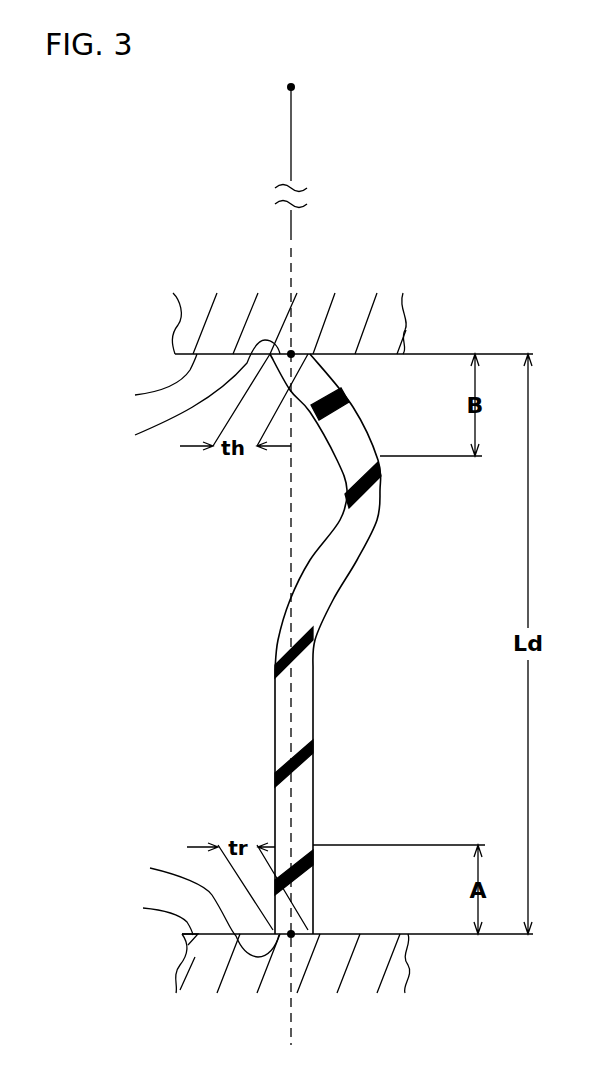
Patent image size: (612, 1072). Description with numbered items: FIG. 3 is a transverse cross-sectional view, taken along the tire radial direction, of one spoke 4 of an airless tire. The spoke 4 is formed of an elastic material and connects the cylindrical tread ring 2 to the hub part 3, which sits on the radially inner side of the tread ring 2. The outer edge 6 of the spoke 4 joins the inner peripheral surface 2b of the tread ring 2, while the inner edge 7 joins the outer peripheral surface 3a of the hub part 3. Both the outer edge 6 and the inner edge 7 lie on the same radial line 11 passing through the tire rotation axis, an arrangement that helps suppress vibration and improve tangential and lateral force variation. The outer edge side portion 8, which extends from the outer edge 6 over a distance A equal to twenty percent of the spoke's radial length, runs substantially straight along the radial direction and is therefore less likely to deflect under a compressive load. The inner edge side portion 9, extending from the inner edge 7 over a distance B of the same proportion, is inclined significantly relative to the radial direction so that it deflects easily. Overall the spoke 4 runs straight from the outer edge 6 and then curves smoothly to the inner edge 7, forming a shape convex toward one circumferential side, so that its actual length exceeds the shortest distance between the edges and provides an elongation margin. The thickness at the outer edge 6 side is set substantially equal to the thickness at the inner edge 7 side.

The tread ring 2 is at (338, 1022).
The inner peripheral surface 2b is at (151, 914).
The hub part 3 is at (333, 279).
The outer peripheral surface 3a is at (147, 382).
The spoke 4 is at (217, 672).
The outer edge 6 is at (220, 901).
The inner edge 7 is at (210, 396).
The outer edge side portion 8 is at (316, 895).
The inner edge side portion 9 is at (356, 406).
The radial line 11 is at (291, 515).